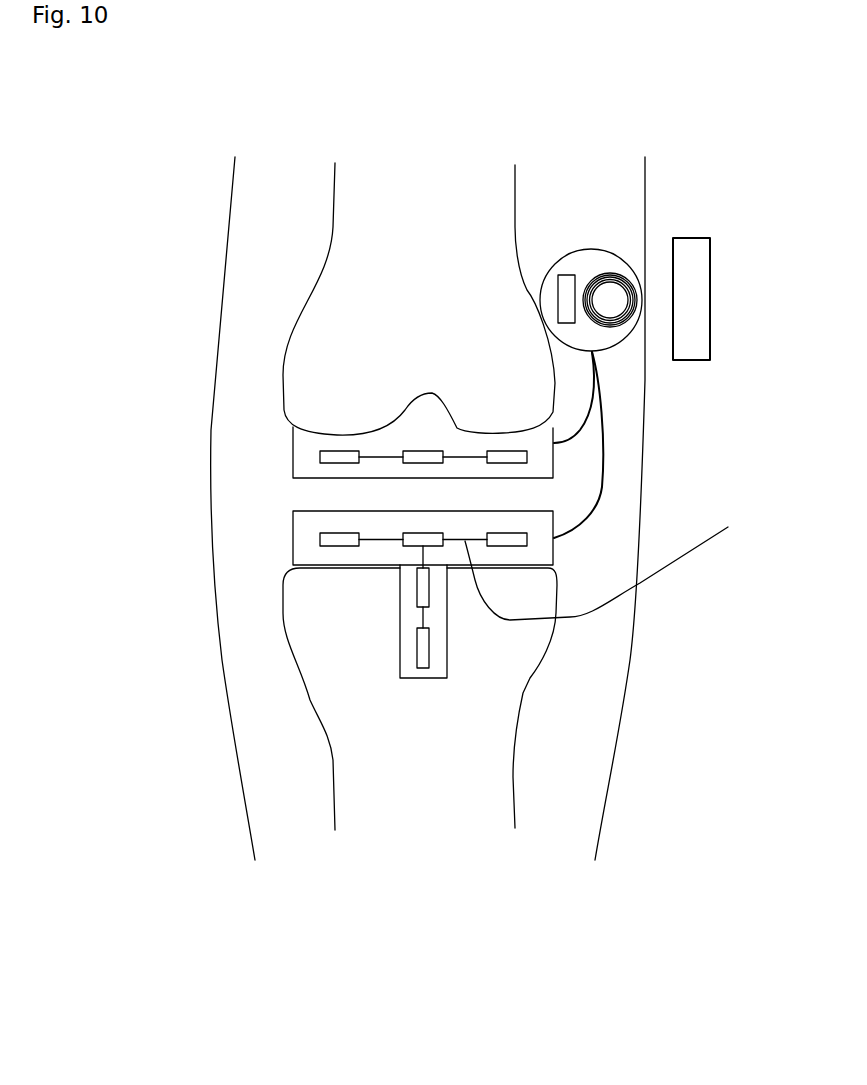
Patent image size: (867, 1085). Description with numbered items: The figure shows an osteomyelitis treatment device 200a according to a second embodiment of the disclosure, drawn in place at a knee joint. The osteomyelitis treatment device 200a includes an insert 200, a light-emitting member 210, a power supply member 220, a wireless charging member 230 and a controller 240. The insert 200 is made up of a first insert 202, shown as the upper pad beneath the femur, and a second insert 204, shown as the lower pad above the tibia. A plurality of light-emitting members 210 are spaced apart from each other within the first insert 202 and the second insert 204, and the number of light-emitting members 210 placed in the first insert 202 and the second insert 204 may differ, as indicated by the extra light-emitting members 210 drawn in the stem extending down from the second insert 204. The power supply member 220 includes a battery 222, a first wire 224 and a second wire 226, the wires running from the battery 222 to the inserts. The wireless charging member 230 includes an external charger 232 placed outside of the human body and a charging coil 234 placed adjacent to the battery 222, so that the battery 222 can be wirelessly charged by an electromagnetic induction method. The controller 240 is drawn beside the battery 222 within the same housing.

The osteomyelitis treatment device 200a is at (134, 418).
The insert 200 is at (120, 443).
The first insert 202 is at (293, 448).
The second insert 204 is at (293, 512).
The light-emitting member 210 is at (423, 463).
The power supply member 220 is at (785, 418).
The battery 222 is at (608, 305).
The first wire 224 is at (588, 413).
The second wire 226 is at (619, 562).
The wireless charging member 230 is at (762, 104).
The external charger 232 is at (692, 238).
The charging coil 234 is at (612, 273).
The controller 240 is at (557, 302).